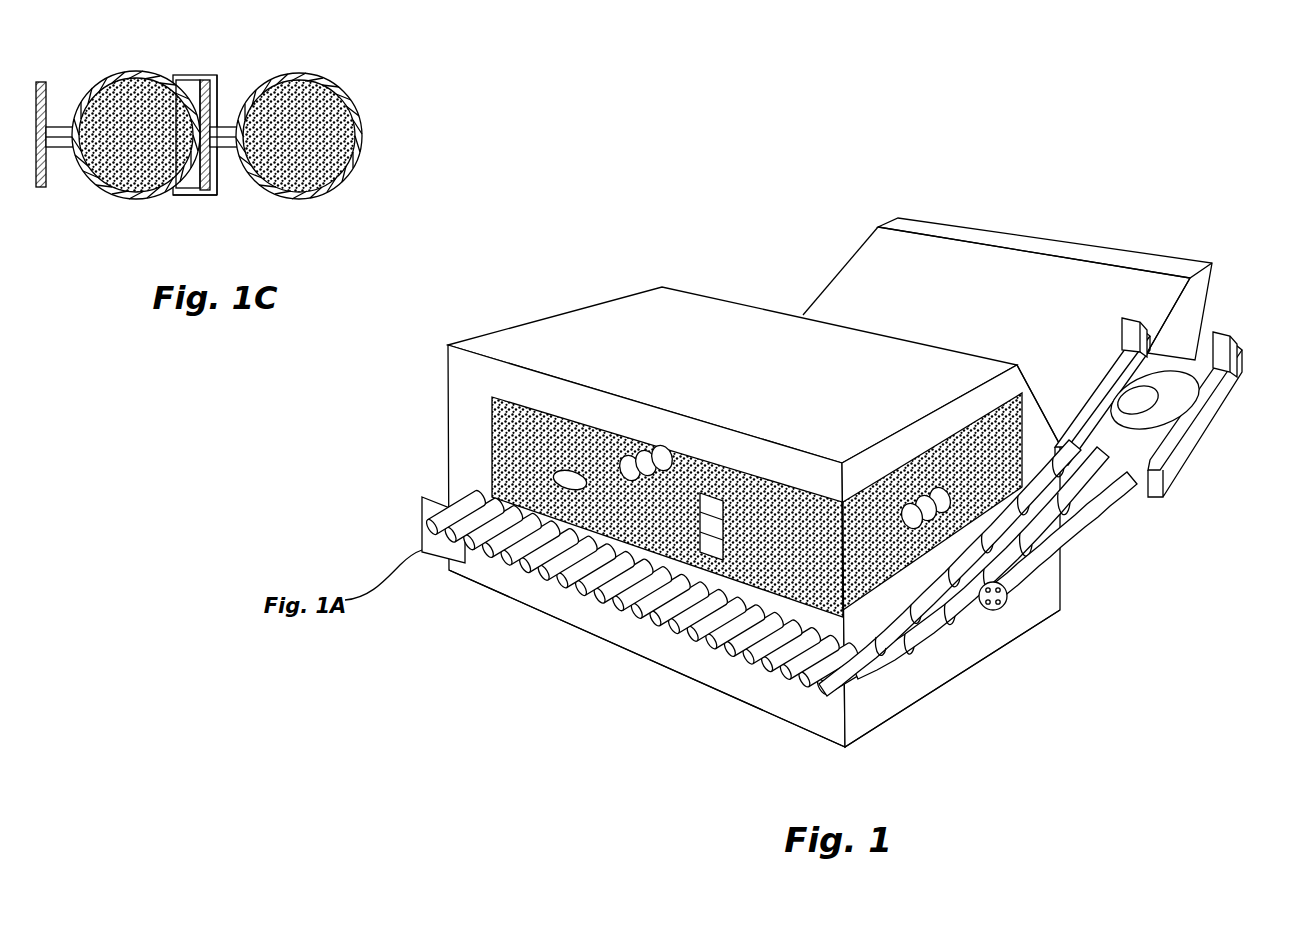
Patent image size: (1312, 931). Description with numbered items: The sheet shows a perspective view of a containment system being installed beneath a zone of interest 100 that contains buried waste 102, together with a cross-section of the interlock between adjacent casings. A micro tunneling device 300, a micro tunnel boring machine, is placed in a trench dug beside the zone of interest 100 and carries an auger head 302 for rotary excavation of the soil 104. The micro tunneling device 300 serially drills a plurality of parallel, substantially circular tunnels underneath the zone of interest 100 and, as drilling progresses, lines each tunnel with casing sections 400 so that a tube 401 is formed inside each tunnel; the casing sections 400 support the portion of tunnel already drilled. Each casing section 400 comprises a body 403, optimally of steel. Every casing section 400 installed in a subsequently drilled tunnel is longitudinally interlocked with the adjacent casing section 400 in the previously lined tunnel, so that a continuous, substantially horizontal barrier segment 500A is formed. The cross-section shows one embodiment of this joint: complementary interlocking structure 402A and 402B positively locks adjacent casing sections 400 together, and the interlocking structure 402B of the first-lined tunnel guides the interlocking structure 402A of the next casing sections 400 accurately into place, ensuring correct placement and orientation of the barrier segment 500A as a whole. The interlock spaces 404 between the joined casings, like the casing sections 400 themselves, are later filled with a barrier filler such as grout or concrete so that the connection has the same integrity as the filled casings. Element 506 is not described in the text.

In FIG. 1, the zone of interest 100 is at (507, 455).
In FIG. 1, the buried waste 102 is at (693, 556).
In FIG. 1, the soil 104 is at (957, 617).
In FIG. 1, the micro tunneling device 300 is at (838, 272).
In FIG. 1, the auger head 302 is at (996, 611).
In FIG. 1C, the casing section 400 is at (289, 68).
In FIG. 1, the casing section 400 is at (853, 665).
In FIG. 1, the tube 401 is at (803, 676).
In FIG. 1C, the complementary interlocking structure 402A is at (201, 195).
In FIG. 1C, the complementary interlocking structure 402B is at (228, 167).
In FIG. 1C, the body 403 is at (332, 188).
In FIG. 1, the body 403 is at (840, 673).
In FIG. 1C, the interlock space 404 is at (225, 128).
In FIG. 1, the barrier segment 500A is at (575, 612).
In FIG. 1C, the cable core 506 is at (328, 123).